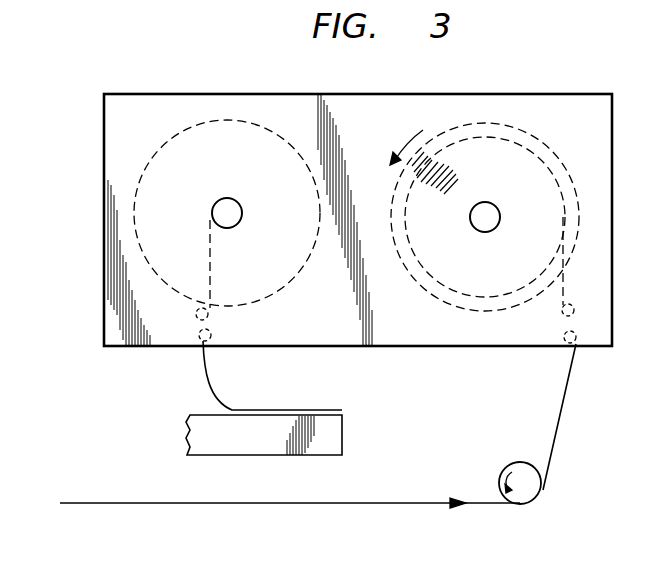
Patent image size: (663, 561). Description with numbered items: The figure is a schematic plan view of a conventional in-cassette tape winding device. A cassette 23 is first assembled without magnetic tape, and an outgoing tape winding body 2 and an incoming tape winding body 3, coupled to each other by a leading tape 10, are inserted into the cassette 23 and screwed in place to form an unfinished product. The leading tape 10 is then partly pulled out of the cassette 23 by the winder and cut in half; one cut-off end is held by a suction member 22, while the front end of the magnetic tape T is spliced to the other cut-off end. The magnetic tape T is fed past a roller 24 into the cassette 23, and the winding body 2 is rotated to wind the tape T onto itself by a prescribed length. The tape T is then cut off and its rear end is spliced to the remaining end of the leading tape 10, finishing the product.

The outgoing tape winding body 2 is at (551, 143).
The incoming tape winding body 3 is at (156, 152).
The leading tape 10 is at (228, 410).
The suction member 22 is at (279, 456).
The cassette 23 is at (413, 94).
The roller 24 is at (533, 487).
The magnetic tape T is at (559, 418).